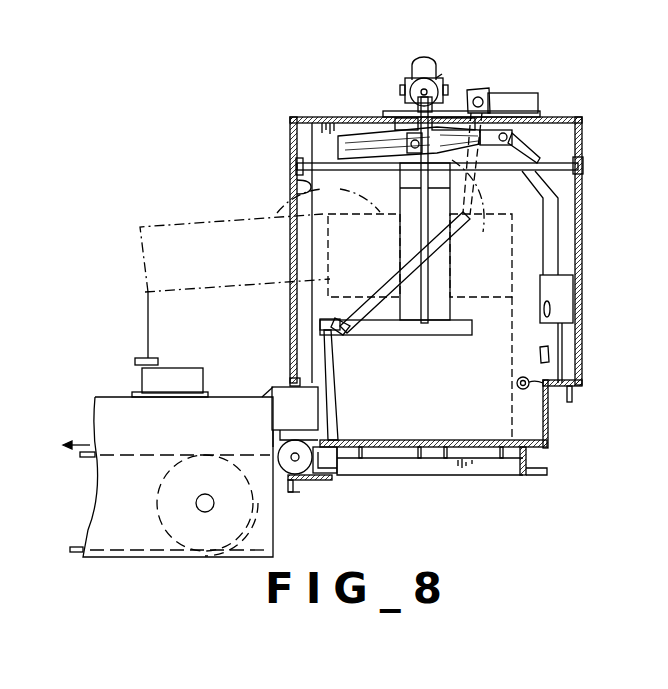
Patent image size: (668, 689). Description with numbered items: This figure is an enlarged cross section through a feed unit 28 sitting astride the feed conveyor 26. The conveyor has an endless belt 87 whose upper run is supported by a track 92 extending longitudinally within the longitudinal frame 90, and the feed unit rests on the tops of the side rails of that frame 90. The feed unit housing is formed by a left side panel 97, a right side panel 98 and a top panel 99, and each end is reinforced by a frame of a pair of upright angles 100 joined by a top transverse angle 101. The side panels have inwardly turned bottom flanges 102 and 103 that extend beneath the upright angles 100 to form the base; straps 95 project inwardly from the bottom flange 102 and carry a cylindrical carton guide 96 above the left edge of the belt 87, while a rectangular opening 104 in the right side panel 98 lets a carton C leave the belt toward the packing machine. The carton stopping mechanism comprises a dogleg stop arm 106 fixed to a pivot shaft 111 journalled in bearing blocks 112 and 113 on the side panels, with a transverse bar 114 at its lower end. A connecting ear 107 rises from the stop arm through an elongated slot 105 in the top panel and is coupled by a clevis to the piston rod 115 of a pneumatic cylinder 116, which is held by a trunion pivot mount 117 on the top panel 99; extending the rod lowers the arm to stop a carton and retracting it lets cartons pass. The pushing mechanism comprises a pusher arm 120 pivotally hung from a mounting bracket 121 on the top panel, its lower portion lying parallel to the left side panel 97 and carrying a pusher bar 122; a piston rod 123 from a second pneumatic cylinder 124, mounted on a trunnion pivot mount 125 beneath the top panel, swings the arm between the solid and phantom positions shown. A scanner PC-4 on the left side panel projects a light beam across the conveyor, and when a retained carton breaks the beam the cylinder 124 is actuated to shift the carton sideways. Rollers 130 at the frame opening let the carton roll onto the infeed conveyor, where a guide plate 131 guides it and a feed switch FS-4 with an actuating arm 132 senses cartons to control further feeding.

The feed conveyor 26 is at (533, 431).
The feed unit 28 is at (418, 263).
The endless belt 87 is at (440, 440).
The longitudinal frame 90 is at (548, 446).
The track 92 is at (457, 450).
The straps 95 is at (530, 380).
The carton guide 96 is at (518, 387).
The left side panel 97 is at (580, 194).
The right side panel 98 is at (292, 146).
The top panel 99 is at (330, 117).
The upright angles 100 is at (292, 299).
The top transverse angle 101 is at (553, 132).
The bottom flange 102 is at (568, 384).
The bottom flange 103 is at (294, 379).
The rectangular opening 104 is at (290, 239).
The elongated slot 105 is at (472, 90).
The stop arm 106 is at (400, 247).
The connecting ear 107 is at (416, 112).
The pivot shaft 111 is at (550, 163).
The bearing block 112 is at (584, 168).
The bearing block 113 is at (300, 187).
The transverse bar 114 is at (346, 336).
The piston rod 115 is at (449, 115).
The pneumatic cylinder 116 is at (425, 58).
The trunion pivot mount 117 is at (418, 118).
The pusher arm 120 is at (544, 242).
The mounting bracket 121 is at (538, 102).
The pusher bar 122 is at (320, 327).
The piston rod 123 is at (466, 178).
The pneumatic cylinder 124 is at (340, 148).
The trunnion pivot mount 125 is at (408, 136).
The rollers 130 is at (290, 449).
The guide plate 131 is at (200, 477).
The actuating arm 132 is at (135, 362).
The carton C is at (328, 196).
The scanner PC-4 is at (547, 285).
The feed switch FS-4 is at (181, 376).